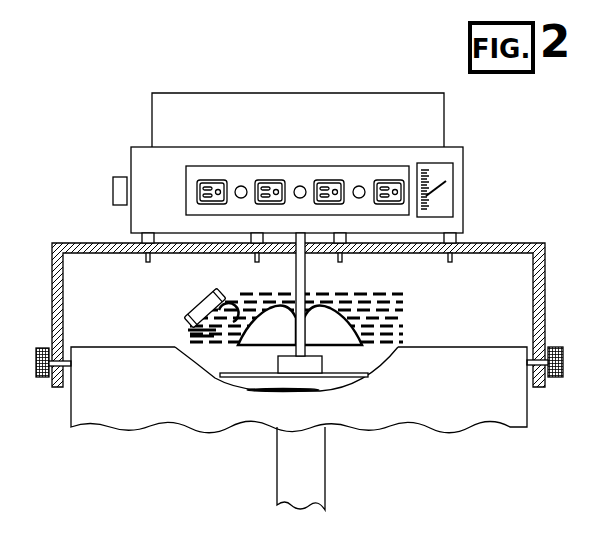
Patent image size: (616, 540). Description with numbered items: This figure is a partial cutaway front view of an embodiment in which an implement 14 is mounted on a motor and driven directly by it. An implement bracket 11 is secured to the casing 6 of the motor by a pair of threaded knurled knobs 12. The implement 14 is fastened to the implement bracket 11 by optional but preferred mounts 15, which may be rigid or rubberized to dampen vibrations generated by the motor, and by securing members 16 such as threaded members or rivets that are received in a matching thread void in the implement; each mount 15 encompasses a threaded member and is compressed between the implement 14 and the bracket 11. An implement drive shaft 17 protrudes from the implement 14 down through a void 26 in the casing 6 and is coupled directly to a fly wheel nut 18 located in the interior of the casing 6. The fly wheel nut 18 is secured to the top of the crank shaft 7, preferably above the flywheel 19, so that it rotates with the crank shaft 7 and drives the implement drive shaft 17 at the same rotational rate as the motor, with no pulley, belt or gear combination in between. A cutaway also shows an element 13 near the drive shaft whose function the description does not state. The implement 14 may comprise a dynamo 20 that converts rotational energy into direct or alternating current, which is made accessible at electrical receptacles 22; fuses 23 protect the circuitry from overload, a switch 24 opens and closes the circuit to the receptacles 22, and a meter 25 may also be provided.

The casing 6 is at (145, 407).
The crank shaft 7 is at (308, 470).
The implement bracket 11 is at (52, 292).
The threaded knurled knob 12 is at (44, 348).
The lamp 13 is at (193, 300).
The implement 14 is at (151, 164).
The mount 15 is at (146, 237).
The securing member 16 is at (147, 262).
The implement drive shaft 17 is at (333, 358).
The fly wheel nut 18 is at (310, 365).
The flywheel 19 is at (267, 380).
The dynamo 20 is at (237, 93).
The electrical receptacle 22 is at (210, 180).
The fuse 23 is at (240, 186).
The switch 24 is at (118, 184).
The meter 25 is at (446, 180).
The void 26 is at (386, 331).